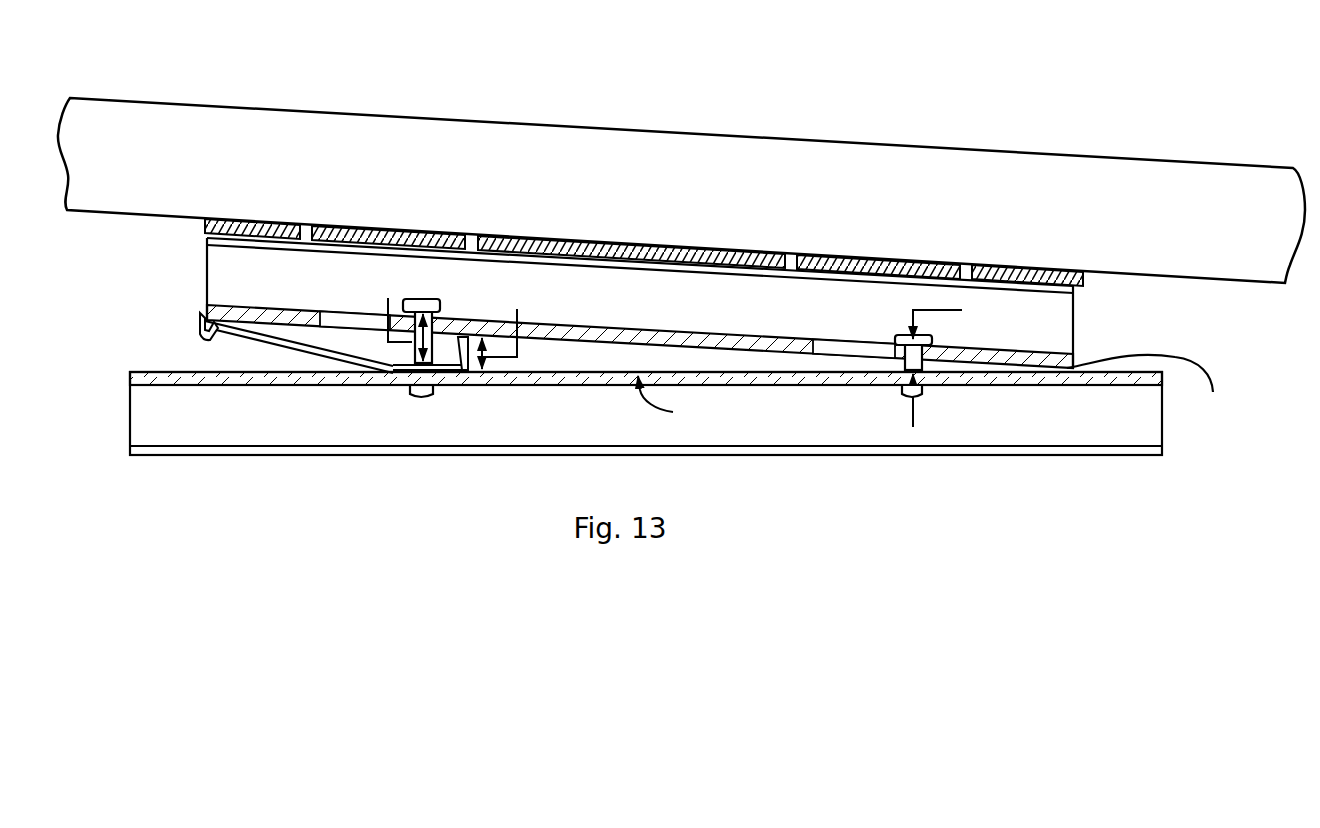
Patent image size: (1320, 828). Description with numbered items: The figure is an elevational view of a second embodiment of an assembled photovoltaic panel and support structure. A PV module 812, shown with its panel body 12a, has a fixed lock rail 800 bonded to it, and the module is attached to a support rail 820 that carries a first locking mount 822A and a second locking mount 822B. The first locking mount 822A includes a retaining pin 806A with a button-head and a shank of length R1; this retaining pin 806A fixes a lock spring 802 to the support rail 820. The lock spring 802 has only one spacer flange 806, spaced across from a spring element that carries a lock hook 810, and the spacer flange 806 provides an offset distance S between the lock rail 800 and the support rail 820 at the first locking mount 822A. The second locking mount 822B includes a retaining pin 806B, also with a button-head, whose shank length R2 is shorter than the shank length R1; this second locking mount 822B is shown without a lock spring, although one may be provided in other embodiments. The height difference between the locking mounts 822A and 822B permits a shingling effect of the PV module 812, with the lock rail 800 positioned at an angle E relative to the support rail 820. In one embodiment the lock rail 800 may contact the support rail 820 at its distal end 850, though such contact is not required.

The PV module 812 is at (739, 94).
The panel 12a is at (1030, 168).
The lock rail 800 is at (1093, 321).
The lock hook 810 is at (187, 309).
The angle E is at (639, 341).
The lock spring 802 is at (259, 347).
The spacer flange 806 is at (462, 358).
The retaining pin 806A is at (426, 298).
The retaining pin 806B is at (900, 333).
The shank length R1 is at (396, 314).
The shank length R2 is at (958, 364).
The offset distance S is at (504, 323).
The distal end 850 is at (1160, 392).
The support rail 820 is at (117, 441).
The first locking mount 822A is at (175, 357).
The second locking mount 822B is at (886, 394).